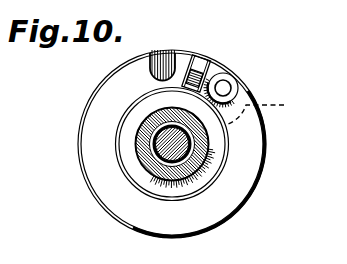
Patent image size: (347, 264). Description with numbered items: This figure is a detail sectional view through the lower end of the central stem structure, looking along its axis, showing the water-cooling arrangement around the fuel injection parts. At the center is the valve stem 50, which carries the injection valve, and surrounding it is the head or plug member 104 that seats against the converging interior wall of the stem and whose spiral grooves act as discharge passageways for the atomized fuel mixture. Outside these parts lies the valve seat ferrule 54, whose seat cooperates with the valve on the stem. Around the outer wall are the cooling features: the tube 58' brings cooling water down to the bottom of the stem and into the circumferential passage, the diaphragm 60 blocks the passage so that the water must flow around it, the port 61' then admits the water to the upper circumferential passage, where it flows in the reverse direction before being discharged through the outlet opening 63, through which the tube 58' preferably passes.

The valve stem 50 is at (172, 143).
The valve seat ferrule 54 is at (152, 168).
The head or plug member 104 is at (174, 143).
The diaphragm 60 is at (194, 67).
The port 61' is at (106, 67).
The tube 58' is at (254, 76).
The outlet opening 63 is at (274, 107).